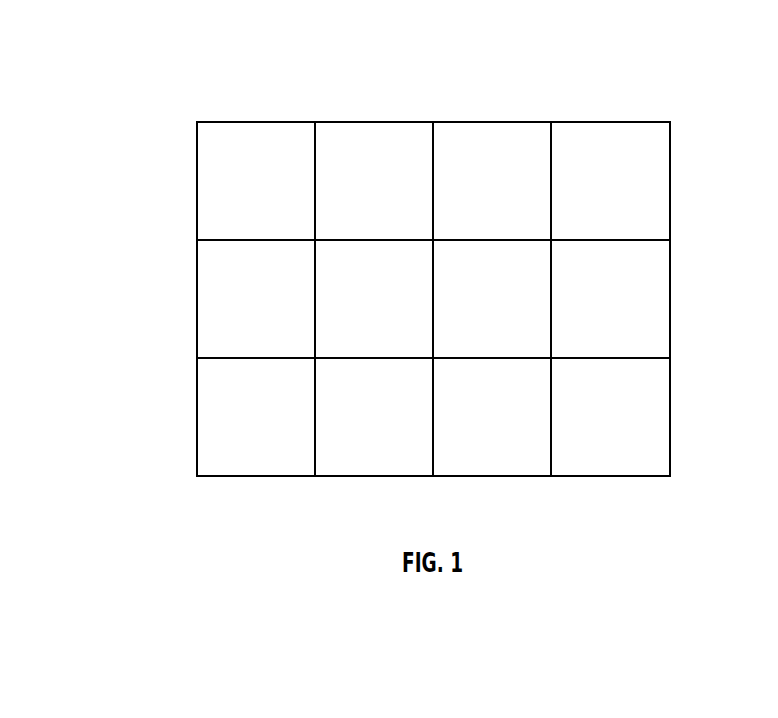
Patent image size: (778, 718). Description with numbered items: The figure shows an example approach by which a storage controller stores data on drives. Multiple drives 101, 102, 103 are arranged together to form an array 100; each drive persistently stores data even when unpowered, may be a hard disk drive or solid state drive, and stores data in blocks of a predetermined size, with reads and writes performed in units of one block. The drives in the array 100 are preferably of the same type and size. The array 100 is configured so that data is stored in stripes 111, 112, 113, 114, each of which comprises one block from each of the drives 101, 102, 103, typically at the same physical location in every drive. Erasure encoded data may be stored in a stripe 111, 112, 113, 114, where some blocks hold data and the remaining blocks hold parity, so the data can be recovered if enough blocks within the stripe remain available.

The array 100 is at (124, 96).
The drive 101 is at (197, 184).
The drive 102 is at (197, 303).
The drive 103 is at (197, 397).
The stripe 111 is at (255, 122).
The stripe 112 is at (374, 122).
The stripe 113 is at (492, 122).
The stripe 114 is at (610, 122).